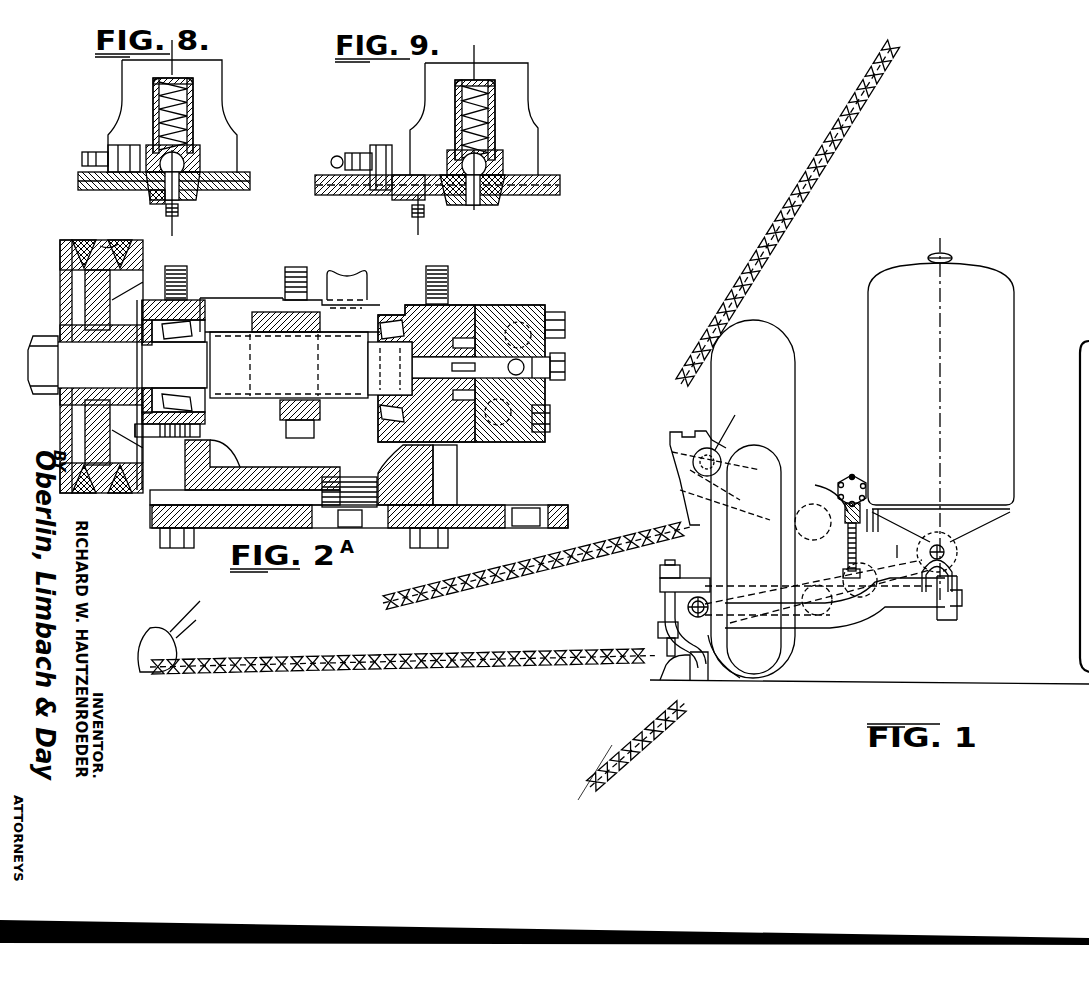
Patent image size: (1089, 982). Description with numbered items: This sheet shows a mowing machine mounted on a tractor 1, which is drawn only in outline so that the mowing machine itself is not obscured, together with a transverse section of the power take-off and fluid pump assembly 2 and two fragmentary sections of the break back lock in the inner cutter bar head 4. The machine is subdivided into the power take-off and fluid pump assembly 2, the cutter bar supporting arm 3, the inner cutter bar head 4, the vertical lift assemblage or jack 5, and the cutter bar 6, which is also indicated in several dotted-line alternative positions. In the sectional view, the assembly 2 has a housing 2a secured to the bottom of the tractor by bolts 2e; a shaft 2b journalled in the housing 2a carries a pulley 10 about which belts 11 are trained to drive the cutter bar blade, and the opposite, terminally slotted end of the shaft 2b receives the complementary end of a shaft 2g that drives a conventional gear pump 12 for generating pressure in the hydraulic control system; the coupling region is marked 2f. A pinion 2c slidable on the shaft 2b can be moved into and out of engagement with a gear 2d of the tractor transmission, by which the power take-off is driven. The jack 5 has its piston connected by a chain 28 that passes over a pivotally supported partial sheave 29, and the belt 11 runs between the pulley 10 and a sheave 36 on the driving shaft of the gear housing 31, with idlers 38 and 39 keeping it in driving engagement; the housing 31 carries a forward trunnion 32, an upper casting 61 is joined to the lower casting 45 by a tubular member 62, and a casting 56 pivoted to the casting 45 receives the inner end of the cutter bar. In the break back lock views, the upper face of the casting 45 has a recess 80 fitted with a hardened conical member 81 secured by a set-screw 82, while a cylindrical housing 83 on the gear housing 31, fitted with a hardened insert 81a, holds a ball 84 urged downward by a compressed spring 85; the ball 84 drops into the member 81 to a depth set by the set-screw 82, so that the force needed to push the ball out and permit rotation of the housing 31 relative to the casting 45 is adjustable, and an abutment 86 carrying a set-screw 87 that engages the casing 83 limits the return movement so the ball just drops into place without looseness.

In FIG. 1, the tractor 1 is at (1015, 320).
In FIG. 2A, the power take-off and fluid pump assembly 2 is at (522, 308).
In FIG. 1, the power take-off and fluid pump assembly 2 is at (960, 552).
In FIG. 2A, the housing 2a is at (388, 318).
In FIG. 2A, the shaft 2b is at (232, 337).
In FIG. 2A, the pinion 2c is at (322, 300).
In FIG. 2A, the gear 2d is at (360, 300).
In FIG. 2A, the bolts 2e is at (188, 278).
In FIG. 2A, the coupling 2f is at (372, 356).
In FIG. 2A, the shaft 2g is at (412, 378).
In FIG. 1, the cutter bar supporting arm 3 is at (905, 608).
In FIG. 1, the inner cutter bar head 4 is at (640, 596).
In FIG. 1, the jack 5 is at (850, 476).
In FIG. 1, the cutter bar 6 is at (420, 656).
In FIG. 2A, the pulley 10 is at (86, 420).
In FIG. 1, the pulley 10 is at (952, 556).
In FIG. 2A, the belts 11 is at (104, 497).
In FIG. 1, the belts 11 is at (896, 541).
In FIG. 2A, the gear pump 12 is at (480, 318).
In FIG. 1, the chain 28 is at (848, 558).
In FIG. 1, the partial sheave 29 is at (825, 490).
In FIG. 8, the housing 31 is at (126, 111).
In FIG. 9, the housing 31 is at (426, 106).
In FIG. 1, the trunnion 32 is at (706, 600).
In FIG. 1, the pulley or sheave 36 is at (820, 604).
In FIG. 1, the idler 38 is at (808, 585).
In FIG. 1, the idler 39 is at (863, 567).
In FIG. 8, the casting 45 is at (100, 190).
In FIG. 9, the casting 45 is at (342, 195).
In FIG. 1, the casting 45 is at (658, 632).
In FIG. 1, the casting 56 is at (681, 668).
In FIG. 1, the upper casting 61 is at (660, 580).
In FIG. 1, the tubular member 62 is at (662, 610).
In FIG. 8, the recess 80 is at (191, 196).
In FIG. 9, the recess 80 is at (446, 202).
In FIG. 8, the substantially conical member 81 is at (160, 198).
In FIG. 9, the substantially conical member 81 is at (406, 200).
In FIG. 8, the hardened steel insert 81a is at (188, 142).
In FIG. 9, the hardened steel insert 81a is at (505, 169).
In FIG. 8, the set-screw 82 is at (172, 216).
In FIG. 9, the set-screw 82 is at (419, 226).
In FIG. 8, the substantially cylindrical housing 83 is at (195, 113).
In FIG. 9, the substantially cylindrical housing 83 is at (497, 112).
In FIG. 8, the ball 84 is at (184, 160).
In FIG. 9, the ball 84 is at (490, 161).
In FIG. 8, the spring 85 is at (193, 92).
In FIG. 9, the spring 85 is at (492, 126).
In FIG. 8, the abutment 86 is at (130, 147).
In FIG. 9, the abutment 86 is at (381, 150).
In FIG. 8, the set-screw 87 is at (84, 156).
In FIG. 9, the set-screw 87 is at (342, 154).